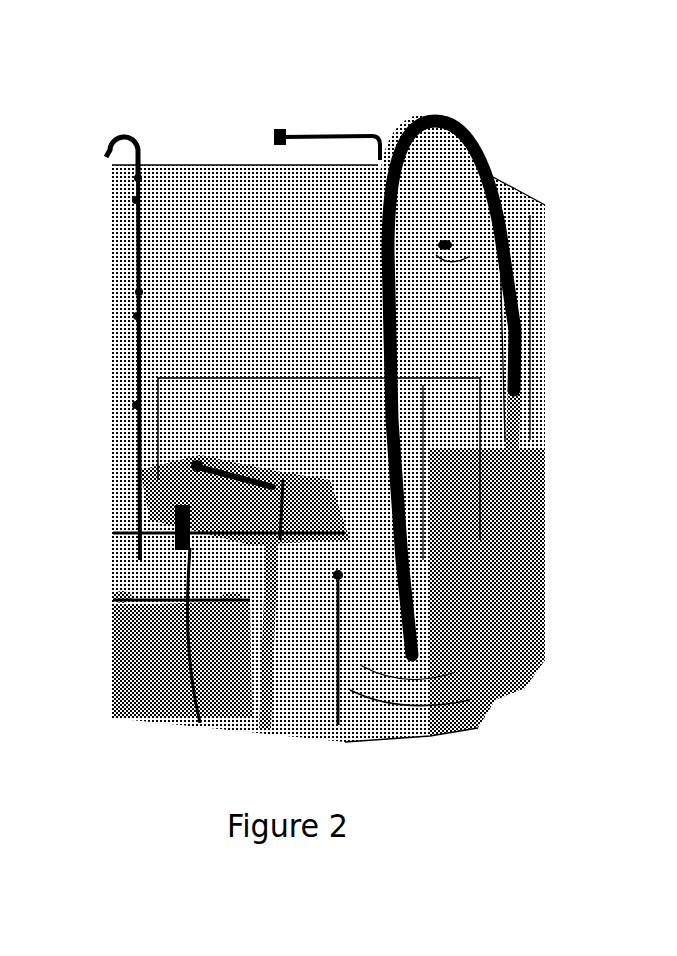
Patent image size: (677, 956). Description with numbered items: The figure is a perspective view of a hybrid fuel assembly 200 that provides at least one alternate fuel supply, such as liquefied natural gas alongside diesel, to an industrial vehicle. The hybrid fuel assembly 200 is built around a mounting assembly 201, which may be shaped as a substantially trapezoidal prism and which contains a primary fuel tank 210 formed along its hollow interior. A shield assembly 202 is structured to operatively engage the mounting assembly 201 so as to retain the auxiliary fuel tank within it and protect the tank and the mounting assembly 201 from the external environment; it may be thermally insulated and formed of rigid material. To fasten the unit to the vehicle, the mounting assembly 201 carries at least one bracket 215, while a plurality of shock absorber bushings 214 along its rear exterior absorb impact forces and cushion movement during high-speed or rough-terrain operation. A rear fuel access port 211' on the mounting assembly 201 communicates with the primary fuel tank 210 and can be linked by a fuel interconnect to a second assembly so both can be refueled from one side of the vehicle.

The hybrid fuel assembly 200 is at (468, 91).
The mounting assembly 201 is at (484, 718).
The shield assembly 202 is at (520, 222).
The primary fuel tank 210 is at (197, 167).
The rear fuel access port 211' is at (411, 734).
The shock absorber bushings 214 is at (308, 530).
The bracket 215 is at (163, 598).